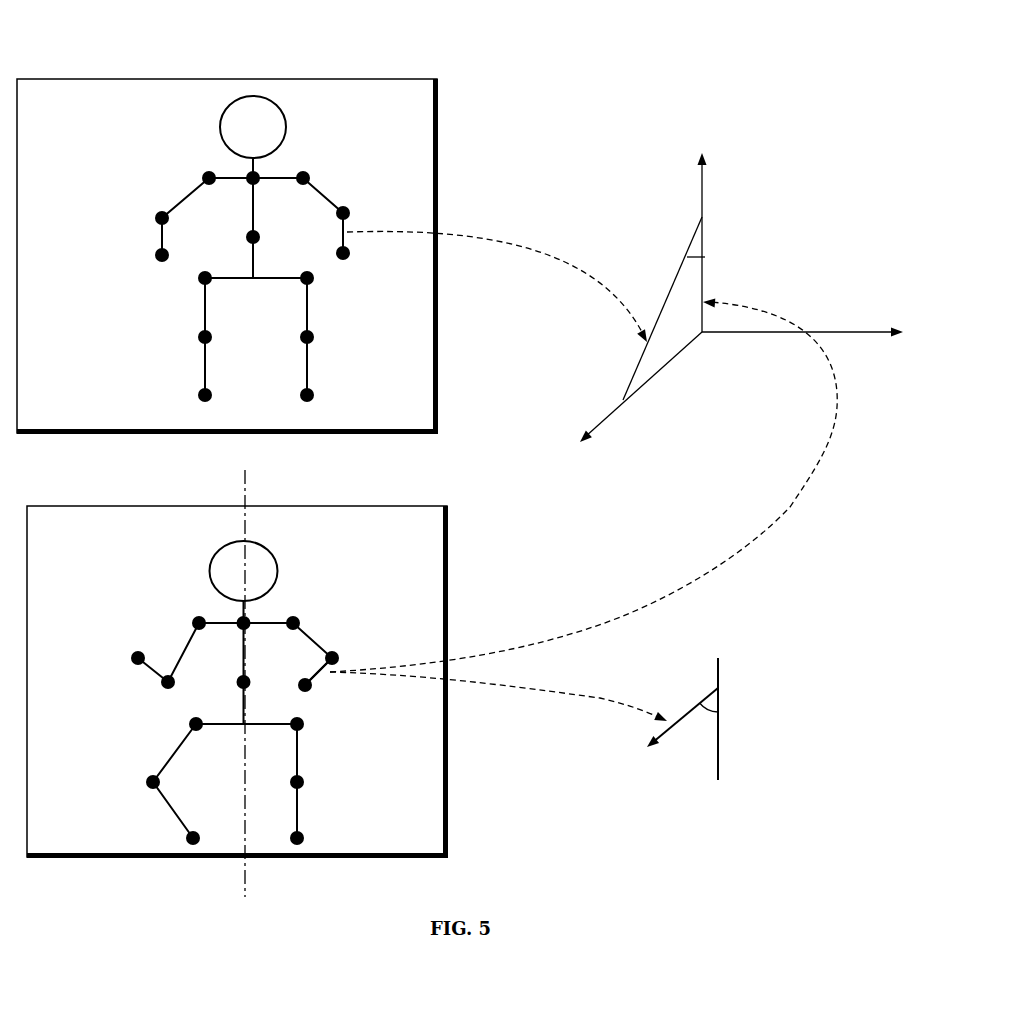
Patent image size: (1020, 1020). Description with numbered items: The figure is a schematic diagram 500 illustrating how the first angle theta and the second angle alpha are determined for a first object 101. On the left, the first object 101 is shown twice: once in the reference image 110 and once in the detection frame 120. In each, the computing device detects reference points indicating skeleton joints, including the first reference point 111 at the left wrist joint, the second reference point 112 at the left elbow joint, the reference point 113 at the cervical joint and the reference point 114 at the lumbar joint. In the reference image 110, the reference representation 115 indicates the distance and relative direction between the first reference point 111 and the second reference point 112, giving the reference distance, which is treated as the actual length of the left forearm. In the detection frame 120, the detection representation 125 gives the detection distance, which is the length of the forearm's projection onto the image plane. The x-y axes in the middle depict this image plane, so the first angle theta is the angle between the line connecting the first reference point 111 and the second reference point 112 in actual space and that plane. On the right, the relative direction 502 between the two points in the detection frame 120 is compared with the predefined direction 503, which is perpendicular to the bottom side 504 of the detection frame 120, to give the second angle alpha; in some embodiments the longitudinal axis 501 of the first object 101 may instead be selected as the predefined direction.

The pose analysis scene 500 is at (160, 42).
The reference image 110 is at (303, 78).
The detection frame 120 is at (298, 506).
The first object 101 is at (273, 470).
The reference point (cervical joint) 113 is at (263, 177).
The second reference point (left elbow joint) 112 is at (348, 213).
The reference point (lumbar joint) 114 is at (258, 233).
The first reference point (left wrist joint) 111 is at (350, 252).
The reference representation 115 is at (341, 231).
The detection representation 125 is at (312, 676).
The longitudinal axis 501 is at (247, 878).
The relative direction 502 is at (682, 717).
The predefined direction 503 is at (720, 758).
The bottom side 504 is at (138, 861).